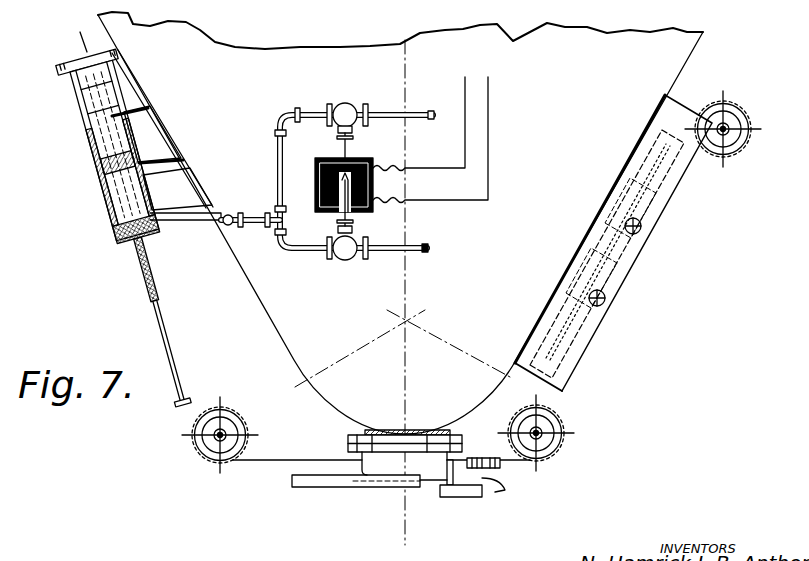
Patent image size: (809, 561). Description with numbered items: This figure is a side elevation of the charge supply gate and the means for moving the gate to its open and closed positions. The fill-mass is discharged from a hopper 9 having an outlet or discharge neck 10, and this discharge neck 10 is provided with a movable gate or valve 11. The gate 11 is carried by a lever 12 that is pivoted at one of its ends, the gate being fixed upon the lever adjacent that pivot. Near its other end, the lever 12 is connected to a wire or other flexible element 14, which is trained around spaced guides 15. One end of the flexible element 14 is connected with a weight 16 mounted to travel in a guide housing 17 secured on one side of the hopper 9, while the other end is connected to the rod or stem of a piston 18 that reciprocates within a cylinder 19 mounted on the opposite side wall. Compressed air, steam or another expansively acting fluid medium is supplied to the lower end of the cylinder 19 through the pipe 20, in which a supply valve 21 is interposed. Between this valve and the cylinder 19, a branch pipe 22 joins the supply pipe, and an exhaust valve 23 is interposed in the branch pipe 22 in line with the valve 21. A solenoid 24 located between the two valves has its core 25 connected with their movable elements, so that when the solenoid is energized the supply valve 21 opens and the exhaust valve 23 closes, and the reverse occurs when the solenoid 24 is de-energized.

The hopper 9 is at (627, 57).
The discharge neck 10 is at (403, 447).
The gate 11 is at (383, 468).
The lever 12 is at (503, 482).
The flexible element 14 is at (267, 463).
The guides 15 is at (212, 448).
The weight 16 is at (600, 332).
The guide housing 17 is at (645, 148).
The piston 18 is at (115, 245).
The cylinder 19 is at (103, 187).
The pipe 20 is at (228, 217).
The valve 21 is at (357, 250).
The branch pipe 22 is at (280, 153).
The exhaust valve 23 is at (342, 117).
The solenoid 24 is at (360, 165).
The core 25 is at (322, 187).